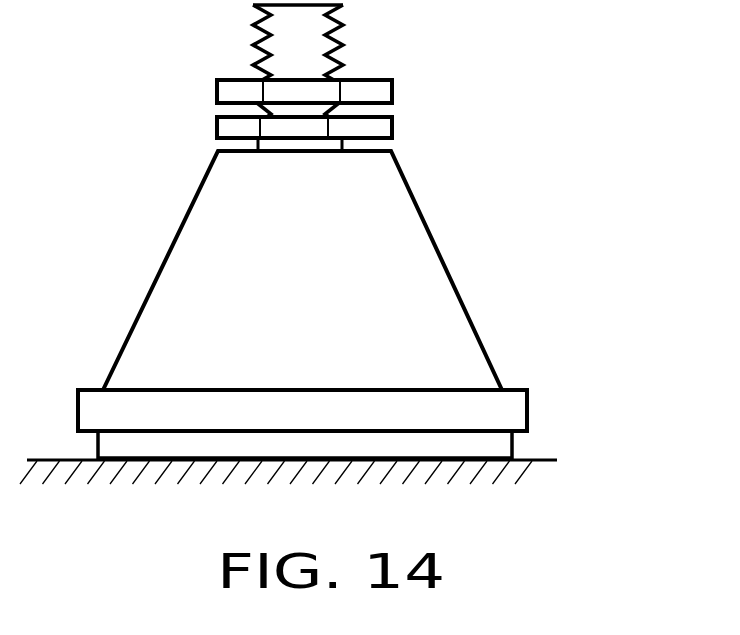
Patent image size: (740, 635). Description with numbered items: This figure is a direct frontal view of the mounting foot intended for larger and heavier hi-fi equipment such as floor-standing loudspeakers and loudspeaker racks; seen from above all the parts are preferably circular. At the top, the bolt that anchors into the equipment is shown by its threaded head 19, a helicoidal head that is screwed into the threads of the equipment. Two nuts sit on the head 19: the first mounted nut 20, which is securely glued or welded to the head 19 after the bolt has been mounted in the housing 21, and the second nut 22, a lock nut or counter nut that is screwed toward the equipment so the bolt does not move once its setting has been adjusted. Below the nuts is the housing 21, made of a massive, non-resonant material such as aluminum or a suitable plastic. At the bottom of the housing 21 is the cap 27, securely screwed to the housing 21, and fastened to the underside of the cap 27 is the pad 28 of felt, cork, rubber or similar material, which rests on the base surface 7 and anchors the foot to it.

The threaded head 19 is at (305, 48).
The second nut 22 is at (357, 92).
The first mounted nut 20 is at (323, 128).
The housing 21 is at (295, 275).
The cap 27 is at (283, 407).
The pad 28 is at (314, 445).
The base surface 7 is at (477, 482).